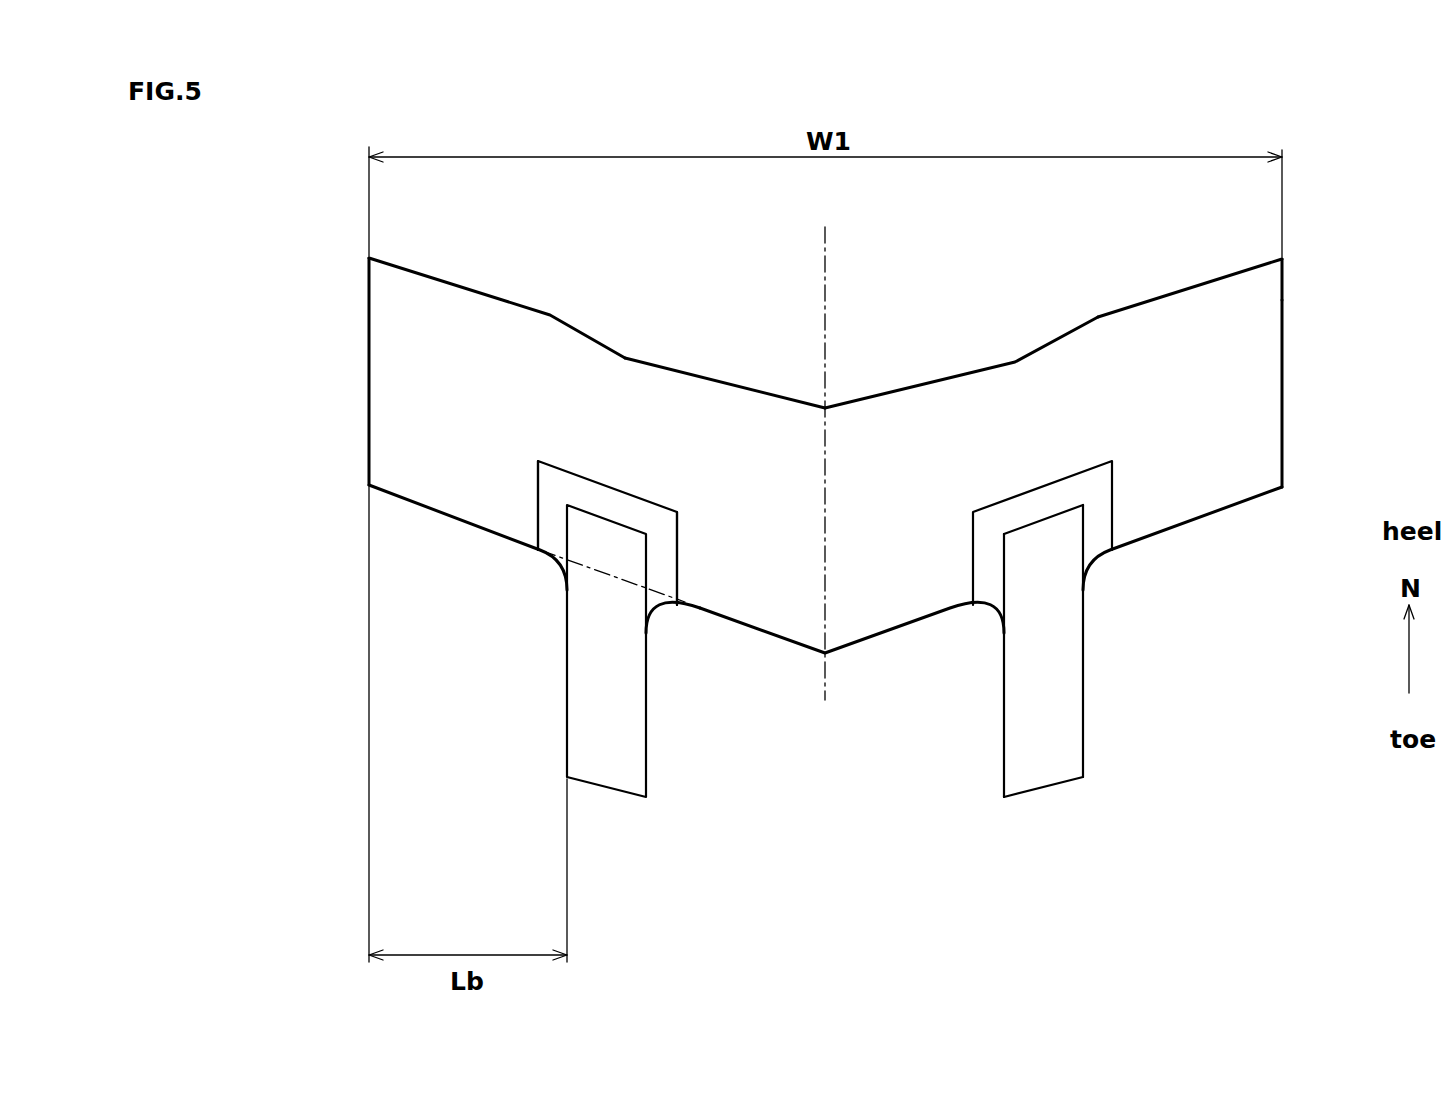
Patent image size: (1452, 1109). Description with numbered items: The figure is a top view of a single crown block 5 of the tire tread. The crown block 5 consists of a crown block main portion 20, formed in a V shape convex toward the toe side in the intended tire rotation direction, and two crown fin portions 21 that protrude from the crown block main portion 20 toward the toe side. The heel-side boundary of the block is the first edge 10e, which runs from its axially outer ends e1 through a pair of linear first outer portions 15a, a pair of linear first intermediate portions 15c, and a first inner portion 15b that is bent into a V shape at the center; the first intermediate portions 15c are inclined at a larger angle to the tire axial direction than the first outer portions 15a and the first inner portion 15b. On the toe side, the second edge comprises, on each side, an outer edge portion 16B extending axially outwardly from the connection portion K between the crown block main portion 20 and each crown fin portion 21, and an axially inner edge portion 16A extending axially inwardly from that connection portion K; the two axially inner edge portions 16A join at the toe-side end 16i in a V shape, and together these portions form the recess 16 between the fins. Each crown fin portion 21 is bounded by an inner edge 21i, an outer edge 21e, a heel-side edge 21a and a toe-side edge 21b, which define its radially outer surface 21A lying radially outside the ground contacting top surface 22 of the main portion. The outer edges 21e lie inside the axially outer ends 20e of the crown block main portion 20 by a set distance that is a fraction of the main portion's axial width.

The crown block 5 is at (1323, 193).
The first edge 10e is at (488, 279).
The first outer portions 15a is at (1187, 285).
The first inner portion 15b is at (757, 387).
The first intermediate portions 15c is at (1058, 337).
The axially outer ends e1 is at (1282, 259).
The axially outer ends of the crown block main portion 20e is at (1283, 378).
The ground contacting top surface 22 is at (413, 335).
The connection portion K is at (502, 481).
The crown block main portion 20 is at (1197, 472).
The crown fin portions 21 is at (607, 700).
The heel-side edge 21a is at (1045, 512).
The radially outer surface 21A is at (1051, 713).
The inner edge 21i is at (1003, 705).
The outer edge 21e is at (1083, 730).
The toe-side edge 21b is at (1043, 787).
The recess 16 is at (621, 701).
The axially inner edge portion 16A is at (742, 625).
The outer edge portion 16B is at (460, 522).
The toe-side end 16i is at (825, 653).